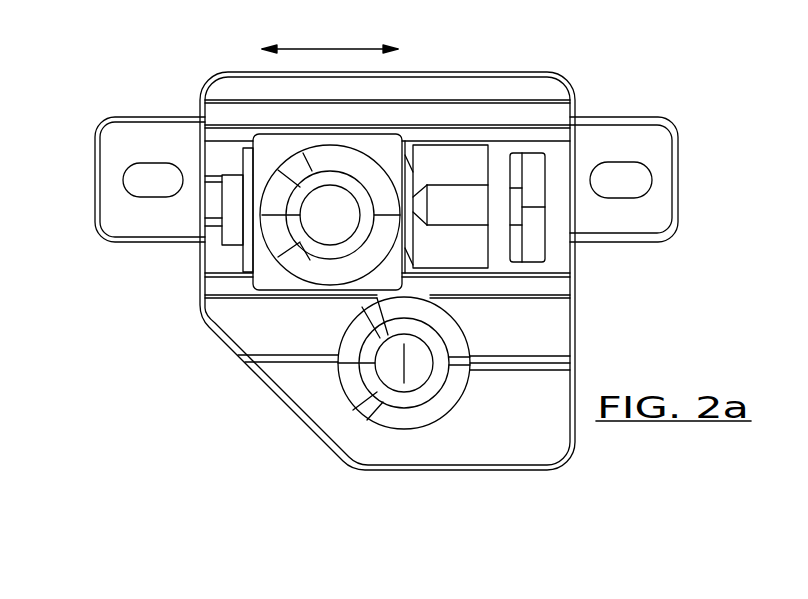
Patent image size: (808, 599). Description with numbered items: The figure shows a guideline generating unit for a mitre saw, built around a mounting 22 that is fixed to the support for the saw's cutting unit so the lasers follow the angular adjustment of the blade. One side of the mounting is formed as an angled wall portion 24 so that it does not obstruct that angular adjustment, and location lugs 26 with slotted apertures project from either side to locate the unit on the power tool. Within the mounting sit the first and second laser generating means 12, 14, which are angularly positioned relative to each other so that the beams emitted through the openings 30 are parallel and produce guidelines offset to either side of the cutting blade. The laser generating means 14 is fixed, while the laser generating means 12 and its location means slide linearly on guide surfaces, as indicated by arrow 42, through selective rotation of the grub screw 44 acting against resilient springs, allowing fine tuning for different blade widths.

The first laser generating means 12 is at (280, 230).
The second laser generating means 14 is at (460, 335).
The mounting 22 is at (540, 72).
The wall portion 24 is at (258, 393).
The location lugs 26 is at (130, 117).
The openings 30 is at (330, 223).
The arrow 42 is at (337, 47).
The grub screw 44 is at (475, 197).